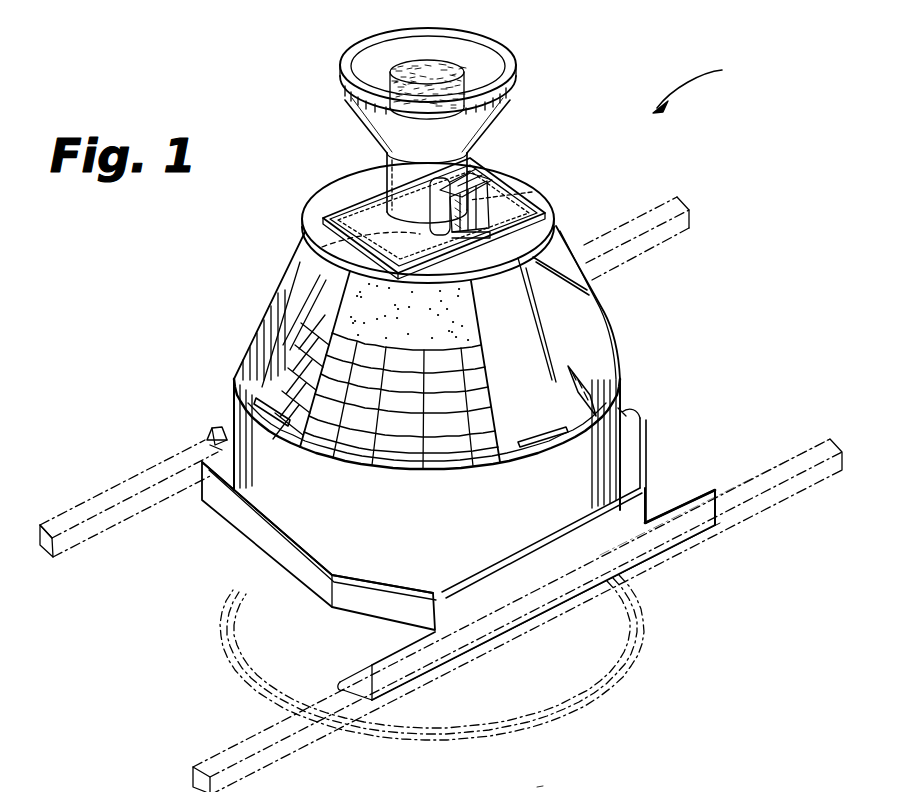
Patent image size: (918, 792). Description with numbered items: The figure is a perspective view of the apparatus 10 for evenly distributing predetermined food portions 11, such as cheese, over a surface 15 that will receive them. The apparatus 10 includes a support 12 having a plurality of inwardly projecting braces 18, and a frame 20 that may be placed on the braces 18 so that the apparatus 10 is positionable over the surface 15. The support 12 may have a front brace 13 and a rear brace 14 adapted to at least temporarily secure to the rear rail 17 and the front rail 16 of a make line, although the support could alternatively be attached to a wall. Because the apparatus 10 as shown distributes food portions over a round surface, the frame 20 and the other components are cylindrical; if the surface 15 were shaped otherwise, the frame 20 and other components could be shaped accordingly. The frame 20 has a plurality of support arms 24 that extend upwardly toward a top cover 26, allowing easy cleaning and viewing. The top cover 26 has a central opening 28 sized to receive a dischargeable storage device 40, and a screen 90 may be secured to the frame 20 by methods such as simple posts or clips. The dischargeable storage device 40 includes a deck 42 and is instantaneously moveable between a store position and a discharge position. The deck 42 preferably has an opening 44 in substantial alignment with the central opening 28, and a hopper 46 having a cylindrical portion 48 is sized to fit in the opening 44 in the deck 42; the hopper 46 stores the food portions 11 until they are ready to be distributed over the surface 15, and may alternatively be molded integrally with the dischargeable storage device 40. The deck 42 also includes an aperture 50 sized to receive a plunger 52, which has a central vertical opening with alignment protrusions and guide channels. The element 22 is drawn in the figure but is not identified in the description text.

The apparatus 10 is at (701, 87).
The food portions 11 is at (458, 72).
The support 12 is at (742, 505).
The front brace 13 is at (358, 680).
The rear brace 14 is at (228, 428).
The surface 15 is at (640, 616).
The front rail 16 is at (227, 748).
The rear rail 17 is at (70, 543).
The inwardly projecting braces 18 is at (526, 789).
The frame 20 is at (612, 417).
The base plate 22 is at (582, 503).
The support arms 24 is at (292, 334).
The top cover 26 is at (310, 192).
The central opening 28 is at (312, 251).
The dischargeable storage device 40 is at (536, 170).
The deck 42 is at (500, 190).
The opening 44 is at (357, 200).
The hopper 46 is at (343, 69).
The cylindrical portion 48 is at (360, 157).
The aperture 50 is at (532, 192).
The plunger 52 is at (478, 193).
The screen 90 is at (583, 383).